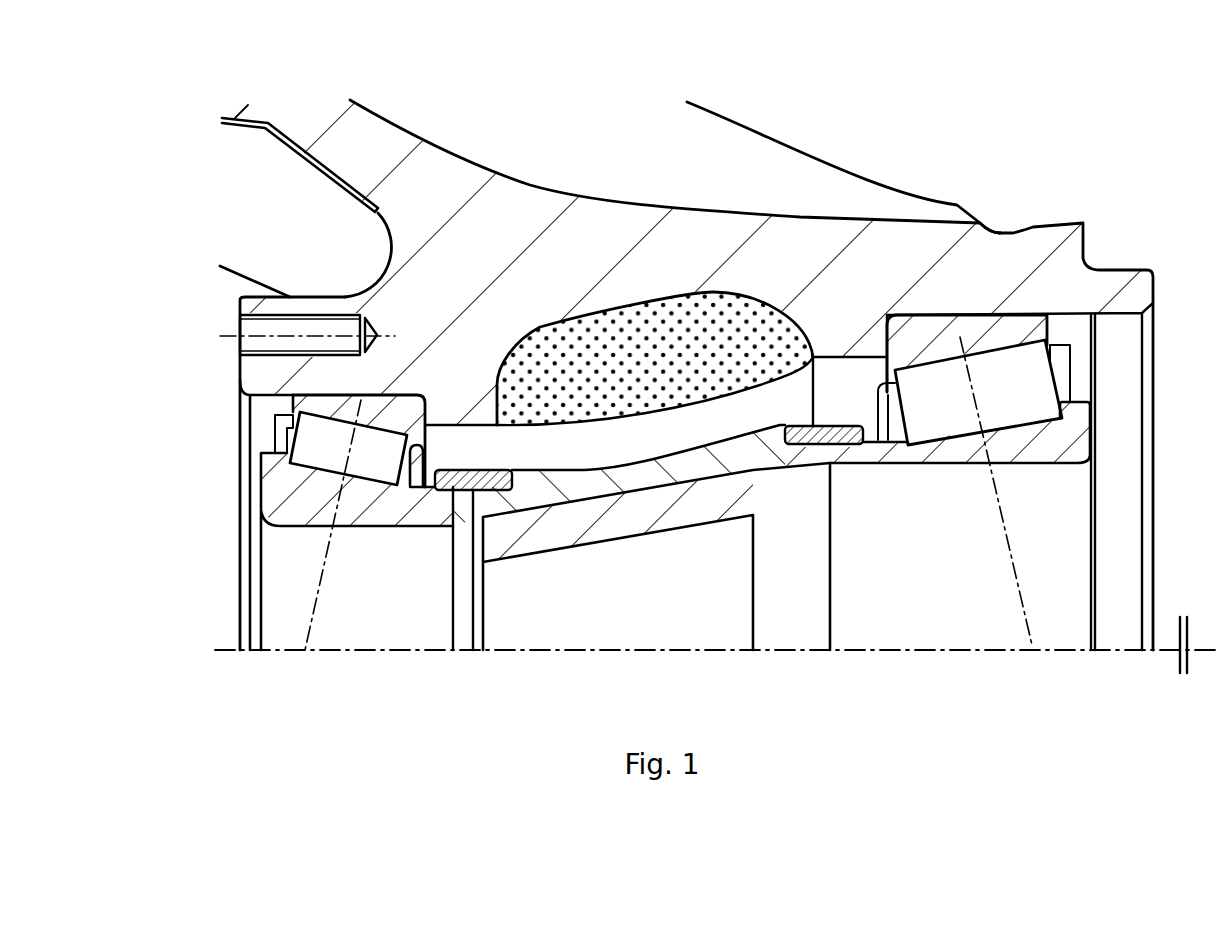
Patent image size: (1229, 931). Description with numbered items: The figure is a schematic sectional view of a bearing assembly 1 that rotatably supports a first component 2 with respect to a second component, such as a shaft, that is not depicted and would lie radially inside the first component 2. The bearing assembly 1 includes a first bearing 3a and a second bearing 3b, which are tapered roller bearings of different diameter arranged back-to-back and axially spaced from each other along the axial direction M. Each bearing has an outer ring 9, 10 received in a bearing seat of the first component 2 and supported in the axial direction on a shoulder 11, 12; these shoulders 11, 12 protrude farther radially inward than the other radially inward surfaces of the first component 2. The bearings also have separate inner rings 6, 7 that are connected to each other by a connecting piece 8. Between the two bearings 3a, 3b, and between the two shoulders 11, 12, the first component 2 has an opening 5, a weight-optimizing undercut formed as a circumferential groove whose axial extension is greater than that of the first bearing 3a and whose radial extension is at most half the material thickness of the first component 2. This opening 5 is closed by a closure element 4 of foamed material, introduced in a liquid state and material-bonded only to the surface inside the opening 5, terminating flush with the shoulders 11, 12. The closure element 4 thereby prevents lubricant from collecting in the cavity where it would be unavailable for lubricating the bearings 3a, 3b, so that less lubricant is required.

The bearing assembly 1 is at (953, 177).
The first component 2 is at (1007, 267).
The first bearing 3a is at (1020, 333).
The second bearing 3b is at (286, 503).
The closure element 4 is at (688, 358).
The opening 5 is at (752, 307).
The inner ring 6 is at (377, 505).
The inner ring 7 is at (947, 450).
The connecting piece 8 is at (687, 470).
The outer ring 9 is at (985, 318).
The outer ring 10 is at (402, 413).
The shoulder 11 is at (857, 357).
The shoulder 12 is at (453, 423).
The axial direction M is at (1173, 647).